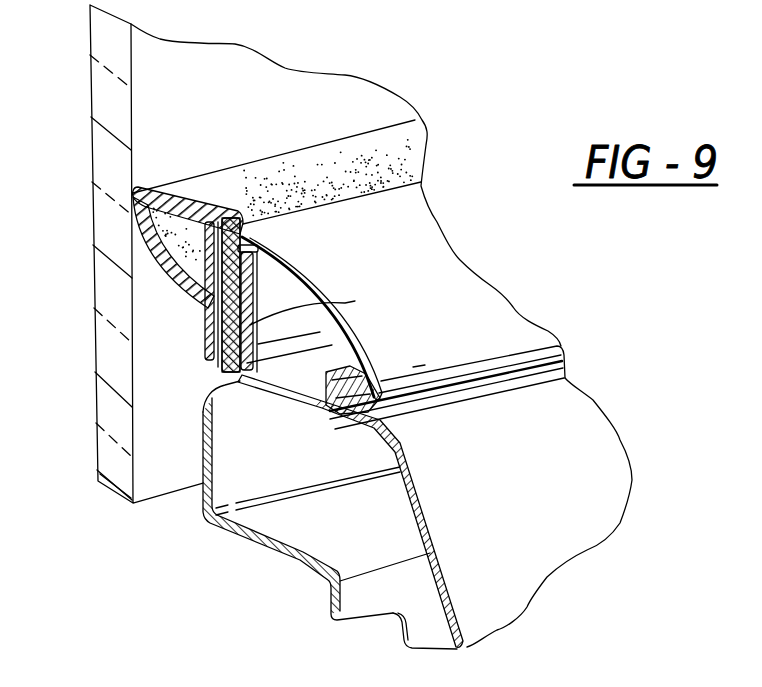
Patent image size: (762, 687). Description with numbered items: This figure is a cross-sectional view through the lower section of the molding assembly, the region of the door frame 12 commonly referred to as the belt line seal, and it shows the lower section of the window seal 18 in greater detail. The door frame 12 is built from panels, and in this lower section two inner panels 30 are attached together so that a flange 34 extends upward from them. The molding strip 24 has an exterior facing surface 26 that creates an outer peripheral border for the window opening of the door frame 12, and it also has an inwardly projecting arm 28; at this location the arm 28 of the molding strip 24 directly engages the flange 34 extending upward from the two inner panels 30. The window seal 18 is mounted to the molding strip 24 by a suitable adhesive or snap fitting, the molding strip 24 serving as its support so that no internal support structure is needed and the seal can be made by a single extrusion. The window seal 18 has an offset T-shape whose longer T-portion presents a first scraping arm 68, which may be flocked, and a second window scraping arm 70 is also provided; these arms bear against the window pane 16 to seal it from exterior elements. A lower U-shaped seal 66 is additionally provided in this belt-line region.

The door frame 12 is at (463, 653).
The window pane 16 is at (352, 90).
The window seal 18 is at (458, 142).
The molding strip 24 is at (513, 334).
The exterior facing surface 26 is at (414, 281).
The inwardly projecting arm 28 is at (340, 303).
The inner panel 30 is at (605, 447).
The flange 34 is at (257, 290).
The lower U-shaped seal 66 is at (328, 416).
The first scraping arm 68 is at (250, 175).
The second window scraping arm 70 is at (168, 259).